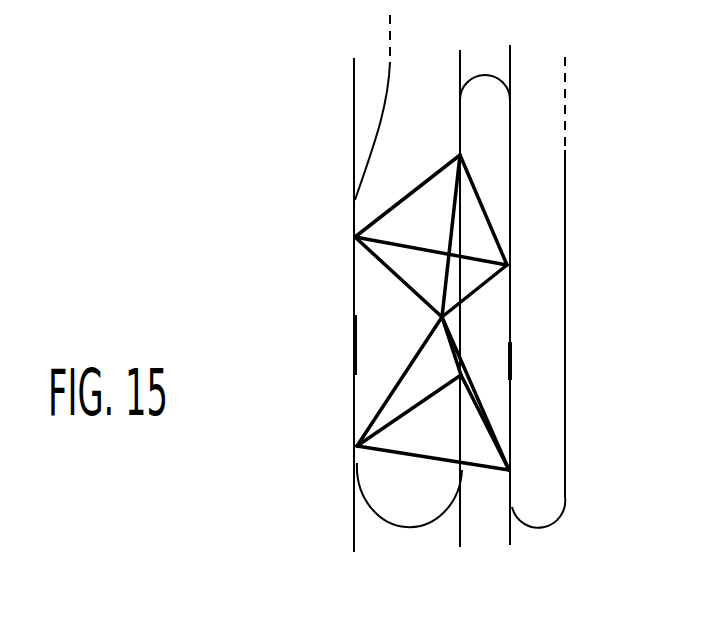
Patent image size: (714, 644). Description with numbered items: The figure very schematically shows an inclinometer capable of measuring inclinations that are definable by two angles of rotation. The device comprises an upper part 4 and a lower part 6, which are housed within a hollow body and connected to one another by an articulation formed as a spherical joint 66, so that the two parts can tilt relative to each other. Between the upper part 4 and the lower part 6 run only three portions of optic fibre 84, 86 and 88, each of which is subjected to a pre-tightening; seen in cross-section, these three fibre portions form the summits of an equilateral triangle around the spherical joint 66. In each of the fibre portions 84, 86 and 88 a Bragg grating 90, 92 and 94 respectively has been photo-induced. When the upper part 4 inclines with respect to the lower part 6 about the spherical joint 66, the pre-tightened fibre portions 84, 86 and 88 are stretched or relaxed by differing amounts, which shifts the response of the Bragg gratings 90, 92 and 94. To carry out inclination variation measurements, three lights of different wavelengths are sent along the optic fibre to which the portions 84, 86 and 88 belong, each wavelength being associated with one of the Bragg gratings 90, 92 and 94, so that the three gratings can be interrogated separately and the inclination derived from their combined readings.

The upper part 4 is at (353, 100).
The lower part 6 is at (353, 523).
The spherical joint 66 is at (440, 318).
The portion of optic fibre 84 is at (353, 412).
The portion of optic fibre 86 is at (510, 433).
The portion of optic fibre 88 is at (463, 205).
The Bragg grating 90 is at (353, 338).
The Bragg grating 92 is at (510, 367).
The Bragg grating 94 is at (463, 277).